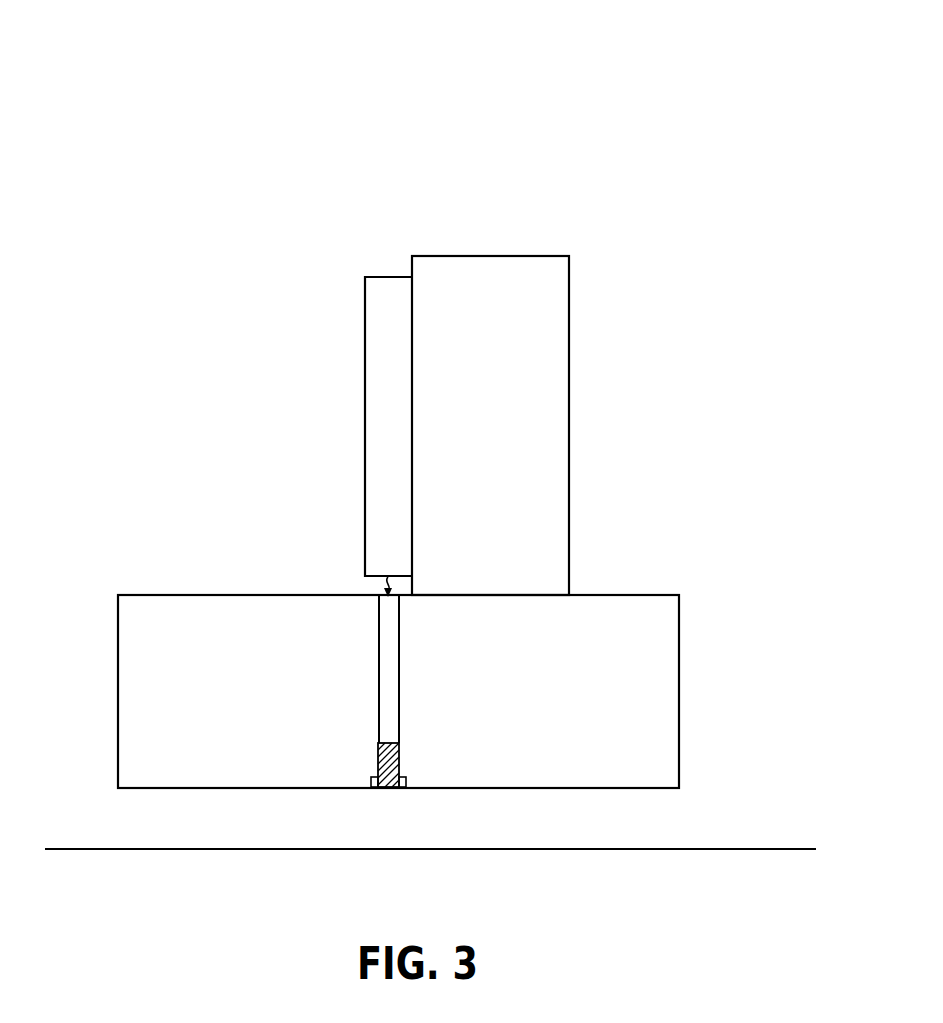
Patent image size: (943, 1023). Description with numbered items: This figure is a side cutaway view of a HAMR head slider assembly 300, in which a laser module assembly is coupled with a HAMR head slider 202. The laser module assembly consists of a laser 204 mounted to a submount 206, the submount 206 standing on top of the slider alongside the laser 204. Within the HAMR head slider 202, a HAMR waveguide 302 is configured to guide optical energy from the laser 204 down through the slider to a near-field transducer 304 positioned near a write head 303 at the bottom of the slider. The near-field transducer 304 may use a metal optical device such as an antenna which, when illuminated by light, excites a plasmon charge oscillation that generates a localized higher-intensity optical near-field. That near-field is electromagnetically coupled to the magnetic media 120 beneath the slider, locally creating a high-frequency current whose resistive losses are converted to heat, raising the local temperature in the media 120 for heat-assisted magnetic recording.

The HAMR head slider assembly 300 is at (340, 86).
The submount 206 is at (538, 293).
The laser 204 is at (374, 410).
The HAMR head slider 202 is at (658, 626).
The HAMR waveguide 302 is at (386, 632).
The near-field transducer 304 is at (378, 780).
The write head 303 is at (392, 788).
The magnetic media 120 is at (768, 849).